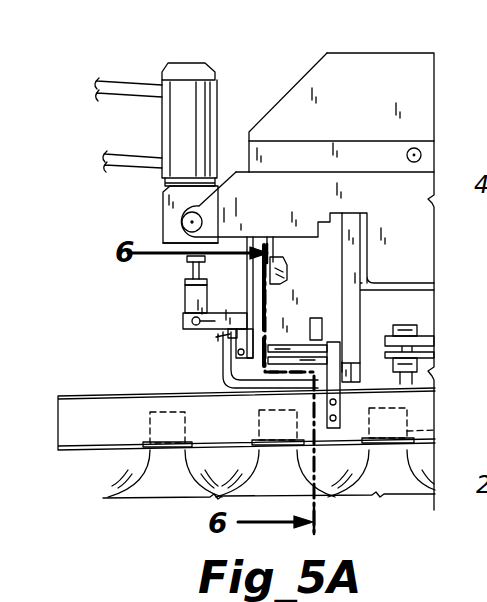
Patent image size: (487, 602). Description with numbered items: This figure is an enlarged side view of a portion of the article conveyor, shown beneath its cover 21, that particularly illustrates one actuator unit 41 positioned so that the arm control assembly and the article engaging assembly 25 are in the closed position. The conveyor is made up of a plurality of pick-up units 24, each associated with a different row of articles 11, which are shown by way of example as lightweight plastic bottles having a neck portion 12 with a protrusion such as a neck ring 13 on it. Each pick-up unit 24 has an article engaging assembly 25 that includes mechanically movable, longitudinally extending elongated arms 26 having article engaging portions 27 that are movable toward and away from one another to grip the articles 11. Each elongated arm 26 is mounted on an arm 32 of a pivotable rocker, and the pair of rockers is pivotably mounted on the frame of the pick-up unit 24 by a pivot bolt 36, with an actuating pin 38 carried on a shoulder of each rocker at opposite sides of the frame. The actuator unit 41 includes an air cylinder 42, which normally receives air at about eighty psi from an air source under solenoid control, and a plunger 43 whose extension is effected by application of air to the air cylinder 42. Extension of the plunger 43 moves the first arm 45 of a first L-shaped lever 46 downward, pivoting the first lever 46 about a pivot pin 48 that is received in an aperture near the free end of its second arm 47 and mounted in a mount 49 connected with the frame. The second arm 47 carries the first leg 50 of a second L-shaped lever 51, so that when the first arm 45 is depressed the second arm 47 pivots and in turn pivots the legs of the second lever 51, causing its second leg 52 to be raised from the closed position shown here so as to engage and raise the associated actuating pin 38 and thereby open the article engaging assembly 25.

The articles 11 is at (401, 483).
The neck portion 12 is at (406, 421).
The neck ring 13 is at (437, 431).
The cover 21 is at (378, 58).
The pick-up unit 24 is at (63, 434).
The article engaging assembly 25 is at (233, 428).
The elongated arm 26 is at (122, 437).
The article engaging portion 27 is at (97, 436).
The arm of rocker 32 is at (343, 407).
The pivot bolt 36 is at (296, 347).
The actuating pin 38 is at (305, 362).
The actuator unit 41 is at (145, 229).
The air cylinder 42 is at (175, 120).
The plunger 43 is at (188, 266).
The first arm 45 is at (184, 315).
The first L-shaped lever 46 is at (195, 322).
The second arm 47 is at (233, 333).
The pivot pin 48 is at (237, 353).
The mount 49 is at (273, 263).
The first leg 50 is at (238, 367).
The second L-shaped lever 51 is at (213, 389).
The second leg 52 is at (274, 390).